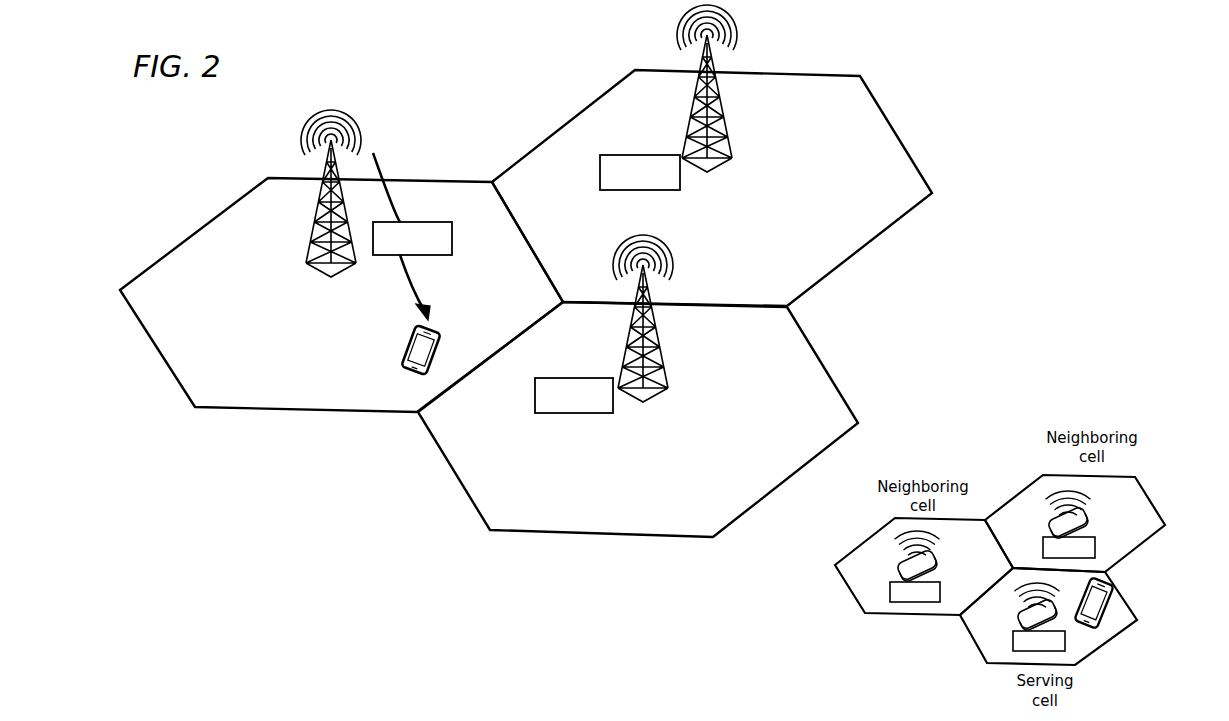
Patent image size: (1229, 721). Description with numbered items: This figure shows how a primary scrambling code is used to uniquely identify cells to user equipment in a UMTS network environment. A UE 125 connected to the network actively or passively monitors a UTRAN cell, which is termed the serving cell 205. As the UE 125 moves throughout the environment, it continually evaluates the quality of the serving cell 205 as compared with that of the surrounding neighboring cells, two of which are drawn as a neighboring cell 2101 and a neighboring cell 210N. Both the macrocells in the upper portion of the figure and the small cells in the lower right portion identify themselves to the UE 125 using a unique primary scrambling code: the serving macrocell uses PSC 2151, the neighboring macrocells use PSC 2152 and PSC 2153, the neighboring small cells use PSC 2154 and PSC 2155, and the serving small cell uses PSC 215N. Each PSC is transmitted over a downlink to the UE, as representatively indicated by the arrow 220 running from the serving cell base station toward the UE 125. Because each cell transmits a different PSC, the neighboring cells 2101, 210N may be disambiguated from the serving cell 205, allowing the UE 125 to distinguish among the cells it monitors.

The serving cell 205 is at (305, 413).
The neighboring cell 210N is at (833, 73).
The neighboring cell 2101 is at (530, 533).
The primary scrambling code (PSC) 2151 is at (452, 253).
The primary scrambling code (PSC) 2152 is at (680, 188).
The primary scrambling code (PSC) 2153 is at (613, 411).
The primary scrambling code (PSC) 2154 is at (890, 601).
The primary scrambling code (PSC) 2155 is at (1095, 537).
The primary scrambling code (PSC) 215N is at (1013, 650).
The downlink transmission of PSC 220 is at (383, 163).
The user equipment (UE) 125 is at (405, 348).